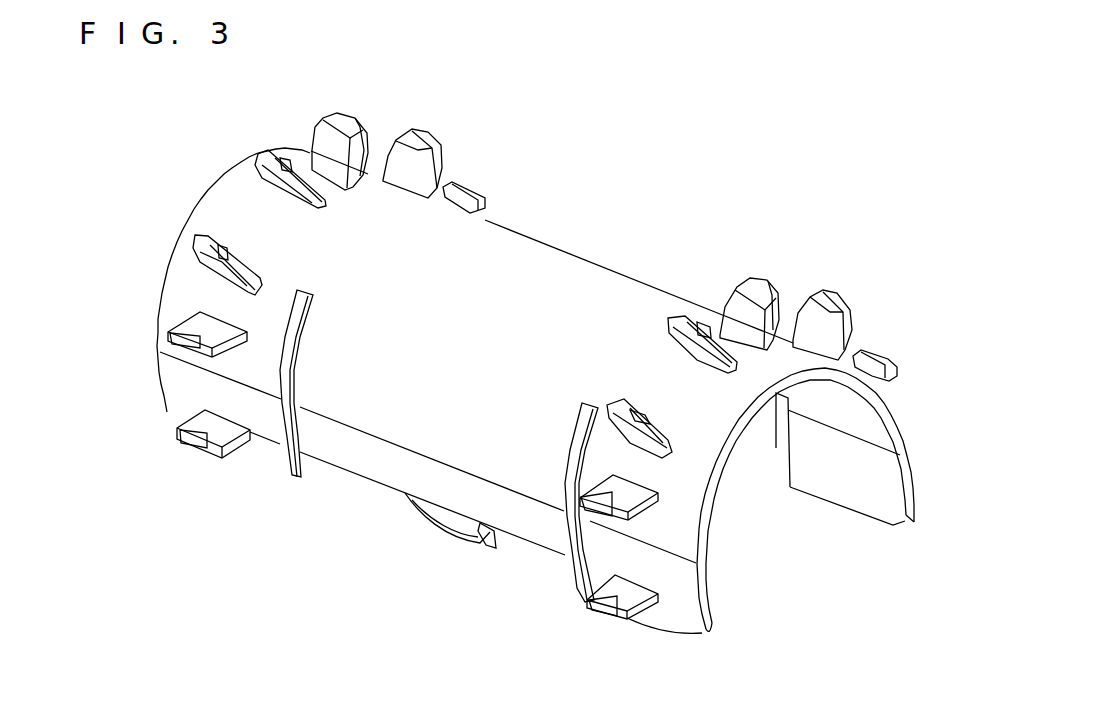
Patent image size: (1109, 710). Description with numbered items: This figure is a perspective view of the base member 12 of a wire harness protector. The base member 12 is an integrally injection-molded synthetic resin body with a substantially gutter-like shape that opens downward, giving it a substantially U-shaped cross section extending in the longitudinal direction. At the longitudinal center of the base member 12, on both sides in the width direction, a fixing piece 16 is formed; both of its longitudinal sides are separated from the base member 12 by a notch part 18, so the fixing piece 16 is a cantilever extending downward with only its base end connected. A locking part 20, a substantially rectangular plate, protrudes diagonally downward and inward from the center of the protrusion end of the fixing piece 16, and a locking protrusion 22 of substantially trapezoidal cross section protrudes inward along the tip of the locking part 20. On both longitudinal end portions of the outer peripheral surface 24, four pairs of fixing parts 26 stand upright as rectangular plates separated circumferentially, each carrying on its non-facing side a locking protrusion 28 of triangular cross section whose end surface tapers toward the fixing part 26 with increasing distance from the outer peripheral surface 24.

The base member 12 is at (604, 135).
The fixing piece 16 is at (430, 408).
The notch part 18 is at (290, 367).
The locking part 20 is at (450, 520).
The locking protrusion 22 is at (495, 543).
The outer peripheral surface 24 is at (573, 293).
The fixing part 26 is at (335, 150).
The locking protrusion 28 is at (317, 180).